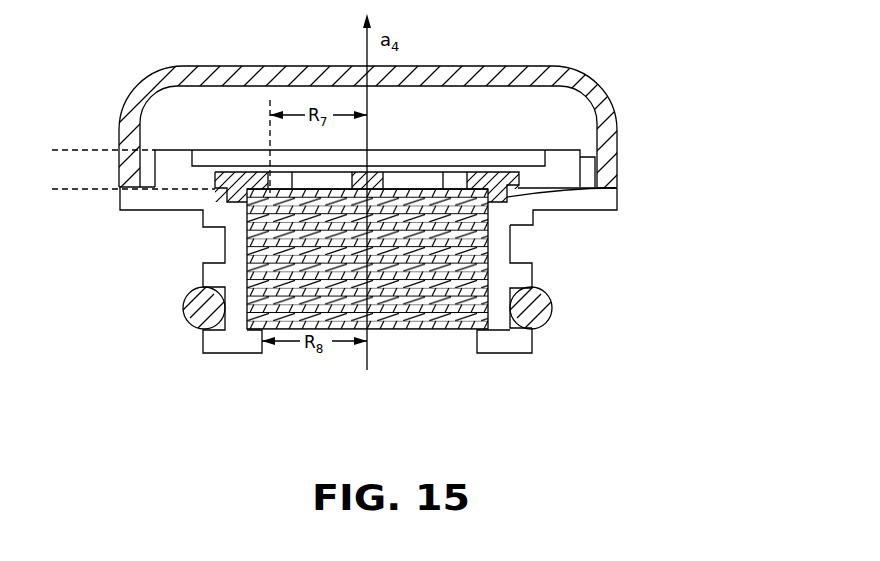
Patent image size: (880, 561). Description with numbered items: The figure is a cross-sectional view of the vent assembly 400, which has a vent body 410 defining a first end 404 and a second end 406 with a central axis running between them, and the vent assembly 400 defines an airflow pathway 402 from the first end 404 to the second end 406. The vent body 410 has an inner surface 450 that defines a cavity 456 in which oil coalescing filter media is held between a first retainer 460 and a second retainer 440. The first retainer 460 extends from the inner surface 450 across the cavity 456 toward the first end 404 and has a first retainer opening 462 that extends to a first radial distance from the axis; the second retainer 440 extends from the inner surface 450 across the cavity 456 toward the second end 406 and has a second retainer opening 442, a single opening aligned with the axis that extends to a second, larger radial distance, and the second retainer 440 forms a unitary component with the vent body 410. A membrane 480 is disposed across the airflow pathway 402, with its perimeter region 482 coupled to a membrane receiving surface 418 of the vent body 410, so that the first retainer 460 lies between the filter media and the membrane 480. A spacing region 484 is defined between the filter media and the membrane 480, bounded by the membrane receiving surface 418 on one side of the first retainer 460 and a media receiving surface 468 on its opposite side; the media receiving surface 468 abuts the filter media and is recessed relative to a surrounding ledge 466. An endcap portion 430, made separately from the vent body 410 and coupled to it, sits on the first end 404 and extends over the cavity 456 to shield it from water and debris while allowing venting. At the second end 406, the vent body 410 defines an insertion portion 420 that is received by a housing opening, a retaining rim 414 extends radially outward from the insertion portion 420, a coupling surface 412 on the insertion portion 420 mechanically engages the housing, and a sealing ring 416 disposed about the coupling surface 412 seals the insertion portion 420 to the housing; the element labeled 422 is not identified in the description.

The vent assembly 400 is at (722, 90).
The airflow pathway 402 is at (390, 352).
The first end 404 is at (608, 48).
The second end 406 is at (516, 368).
The vent body 410 is at (636, 173).
The coupling surface 412 is at (521, 308).
The retaining rim 414 is at (600, 210).
The sealing ring 416 is at (552, 321).
The membrane receiving surface 418 is at (170, 150).
The insertion portion 420 is at (568, 293).
The housing wall 422 is at (510, 250).
The endcap portion 430 is at (567, 64).
The second retainer 440 is at (255, 345).
The second retainer opening 442 is at (337, 364).
The inner surface 450 is at (263, 228).
The cavity 456 is at (232, 158).
The first retainer 460 is at (246, 180).
The first retainer opening 462 is at (446, 174).
The surrounding ledge 466 is at (615, 188).
The media receiving surface 468 is at (480, 213).
The membrane 480 is at (457, 149).
The perimeter region 482 is at (580, 145).
The spacing region 484 is at (68, 203).